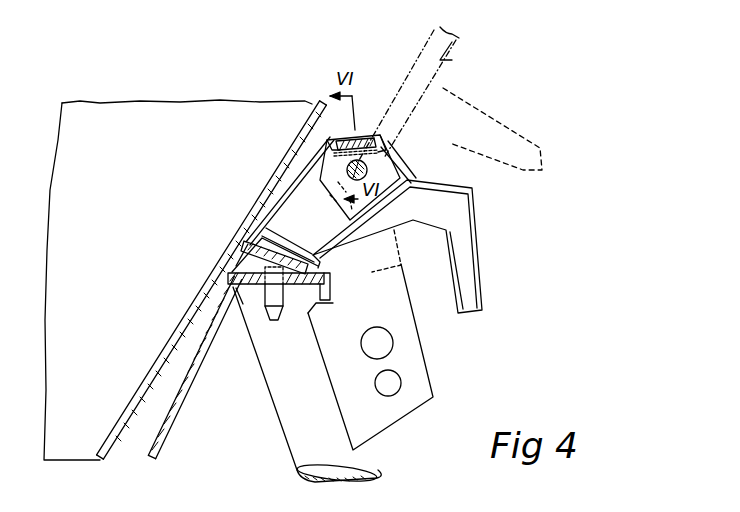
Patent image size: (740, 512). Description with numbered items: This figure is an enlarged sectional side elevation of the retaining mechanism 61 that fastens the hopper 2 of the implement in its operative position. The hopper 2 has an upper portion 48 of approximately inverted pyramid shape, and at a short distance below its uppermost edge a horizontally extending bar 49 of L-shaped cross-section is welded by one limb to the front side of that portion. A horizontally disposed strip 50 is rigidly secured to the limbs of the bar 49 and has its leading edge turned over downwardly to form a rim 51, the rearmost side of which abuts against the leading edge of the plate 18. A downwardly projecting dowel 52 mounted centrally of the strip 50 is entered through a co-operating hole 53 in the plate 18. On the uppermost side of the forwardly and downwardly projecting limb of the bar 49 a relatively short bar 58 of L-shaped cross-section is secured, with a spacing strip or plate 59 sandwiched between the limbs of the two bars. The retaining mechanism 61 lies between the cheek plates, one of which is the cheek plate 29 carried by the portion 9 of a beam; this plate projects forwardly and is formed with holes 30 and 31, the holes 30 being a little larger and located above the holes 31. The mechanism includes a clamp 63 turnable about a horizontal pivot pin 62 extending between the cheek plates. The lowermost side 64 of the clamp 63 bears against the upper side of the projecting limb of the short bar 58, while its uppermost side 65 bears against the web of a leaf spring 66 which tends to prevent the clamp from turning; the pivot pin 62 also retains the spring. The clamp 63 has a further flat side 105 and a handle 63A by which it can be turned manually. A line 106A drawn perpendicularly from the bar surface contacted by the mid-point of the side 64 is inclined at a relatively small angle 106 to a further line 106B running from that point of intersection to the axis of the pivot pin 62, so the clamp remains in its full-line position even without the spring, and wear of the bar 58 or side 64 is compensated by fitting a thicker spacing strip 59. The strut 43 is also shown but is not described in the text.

The hopper 2 is at (120, 103).
The portion of beam 9 is at (282, 434).
The plate 18 is at (228, 314).
The cheek plate 29 is at (392, 428).
The holes 30 is at (392, 343).
The holes 31 is at (401, 386).
The strut bar 43 is at (172, 408).
The upper portion of hopper 48 is at (313, 121).
The bar of L-shaped cross-section 49 is at (244, 248).
The strip 50 is at (276, 261).
The rim 51 is at (330, 293).
The dowel 52 is at (274, 322).
The hole 53 is at (287, 293).
The short bar of L-shaped cross-section 58 is at (288, 225).
The spacing strip or plate 59 is at (296, 232).
The retaining mechanism 61 is at (516, 221).
The pivot pin 62 is at (394, 146).
The clamp 63 is at (328, 183).
The handle 63A is at (496, 115).
The lowermost side of clamp 64 is at (322, 263).
The uppermost side of clamp 65 is at (336, 152).
The leaf spring 66 is at (360, 138).
The flat side of clamp 105 is at (420, 102).
The angle 106 is at (470, 32).
The line 106A is at (432, 52).
The line 106B is at (471, 56).